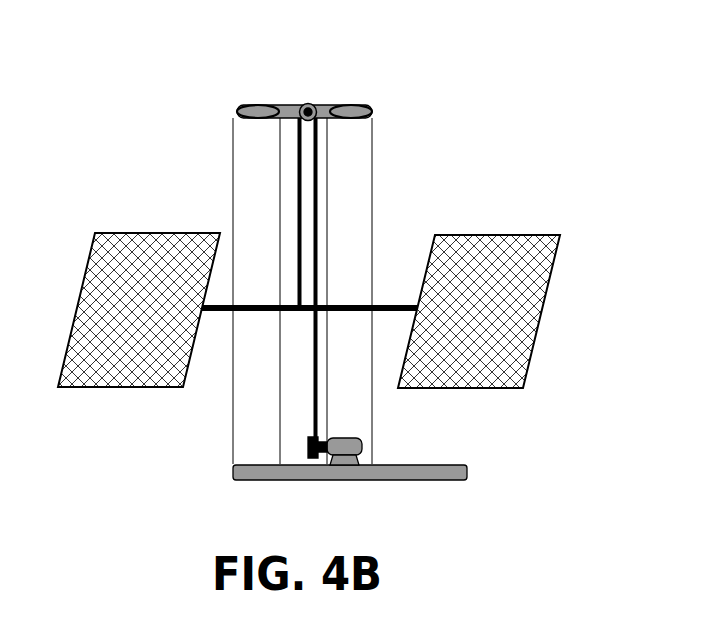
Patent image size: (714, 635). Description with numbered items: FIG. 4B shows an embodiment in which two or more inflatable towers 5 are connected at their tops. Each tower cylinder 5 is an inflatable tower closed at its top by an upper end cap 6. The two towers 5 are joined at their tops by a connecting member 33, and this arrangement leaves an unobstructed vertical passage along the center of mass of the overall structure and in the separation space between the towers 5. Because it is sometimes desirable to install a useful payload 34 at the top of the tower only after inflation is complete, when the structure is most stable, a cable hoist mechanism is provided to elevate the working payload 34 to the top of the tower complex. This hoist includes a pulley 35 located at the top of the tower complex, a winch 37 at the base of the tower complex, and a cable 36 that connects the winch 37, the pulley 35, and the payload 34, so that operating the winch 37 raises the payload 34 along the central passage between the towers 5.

The tower cylinder 5 is at (236, 205).
The upper end cap 6 is at (235, 110).
The arm 33 is at (266, 106).
The payload 34 is at (118, 233).
The pulley 35 is at (320, 100).
The cable 36 is at (317, 235).
The winch 37 is at (363, 450).